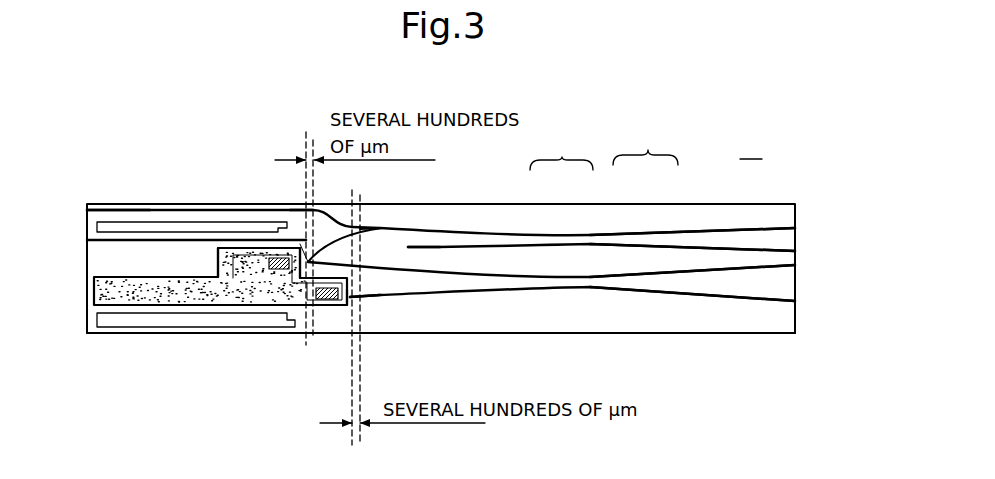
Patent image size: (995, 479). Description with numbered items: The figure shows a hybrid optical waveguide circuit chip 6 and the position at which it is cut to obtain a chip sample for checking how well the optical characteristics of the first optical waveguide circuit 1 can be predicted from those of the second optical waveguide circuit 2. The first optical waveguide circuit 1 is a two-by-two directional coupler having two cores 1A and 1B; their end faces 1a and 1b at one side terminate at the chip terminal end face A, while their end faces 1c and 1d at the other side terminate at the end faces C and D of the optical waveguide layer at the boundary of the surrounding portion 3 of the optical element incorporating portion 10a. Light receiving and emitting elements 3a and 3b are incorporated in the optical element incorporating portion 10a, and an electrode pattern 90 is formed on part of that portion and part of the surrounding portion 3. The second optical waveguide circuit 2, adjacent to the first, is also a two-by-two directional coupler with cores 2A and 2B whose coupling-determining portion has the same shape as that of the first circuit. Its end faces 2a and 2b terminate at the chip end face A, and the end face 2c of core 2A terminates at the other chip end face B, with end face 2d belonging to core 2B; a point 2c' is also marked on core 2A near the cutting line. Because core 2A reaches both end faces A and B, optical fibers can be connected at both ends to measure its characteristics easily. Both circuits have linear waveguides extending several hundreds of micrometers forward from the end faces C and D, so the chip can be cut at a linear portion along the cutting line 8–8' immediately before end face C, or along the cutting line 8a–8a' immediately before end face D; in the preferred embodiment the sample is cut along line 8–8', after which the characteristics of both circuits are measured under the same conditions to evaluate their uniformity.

The first optical waveguide circuit 1 is at (561, 148).
The core 1A is at (570, 277).
The core 1B is at (591, 287).
The end face 1a is at (795, 265).
The end face 1b is at (795, 301).
The end face 1c is at (382, 228).
The end face 1d is at (357, 300).
The second optical waveguide circuit 2 is at (645, 144).
The core 2A is at (612, 232).
The core 2B is at (640, 245).
The end face 2a is at (795, 228).
The end face 2b is at (795, 251).
The end face 2c is at (87, 198).
The second optical fiber cut point 2c' is at (277, 188).
The end face 2d is at (410, 247).
The surrounding portion of the optical element incorporating portion 3 is at (93, 252).
The light receiving and emitting element 3a is at (269, 269).
The light receiving and emitting element 3b is at (317, 300).
The hybrid optical waveguide circuit chip 6 is at (750, 158).
The cutting line 8 is at (327, 212).
The cutting line 8' is at (302, 254).
The cutting line 8a is at (316, 333).
The cutting line 8a' is at (356, 307).
The optical element incorporating portion 10a is at (218, 258).
The electrode pattern 90 is at (110, 293).
The chip end face A is at (797, 322).
The chip end face B is at (87, 318).
The end face of the optical waveguide layer C is at (307, 252).
The end face of the optical waveguide layer D is at (346, 306).